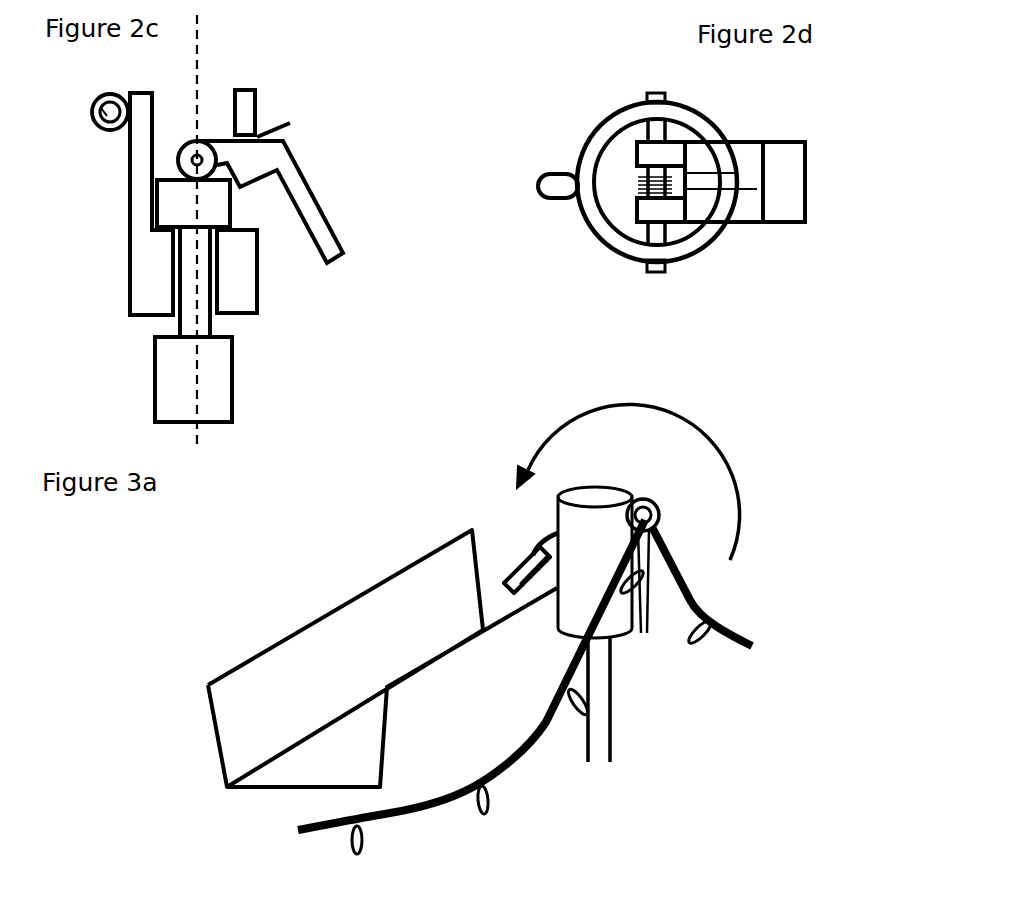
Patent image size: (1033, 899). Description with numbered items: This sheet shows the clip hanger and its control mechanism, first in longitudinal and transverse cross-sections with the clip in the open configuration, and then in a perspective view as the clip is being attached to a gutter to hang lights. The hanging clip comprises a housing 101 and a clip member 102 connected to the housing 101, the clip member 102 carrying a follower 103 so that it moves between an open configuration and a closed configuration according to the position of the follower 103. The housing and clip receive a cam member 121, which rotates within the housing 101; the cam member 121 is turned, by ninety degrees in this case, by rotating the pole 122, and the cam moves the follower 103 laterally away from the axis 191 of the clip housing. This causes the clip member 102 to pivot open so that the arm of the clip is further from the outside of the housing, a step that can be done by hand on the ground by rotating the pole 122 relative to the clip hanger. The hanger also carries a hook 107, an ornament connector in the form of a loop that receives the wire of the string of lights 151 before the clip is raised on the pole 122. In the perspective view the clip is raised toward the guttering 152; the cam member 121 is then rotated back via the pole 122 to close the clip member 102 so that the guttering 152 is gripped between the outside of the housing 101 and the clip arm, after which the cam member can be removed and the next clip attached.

In FIG. 3A, the housing 101 is at (587, 526).
In FIG. 2C, the clip member 102 is at (328, 263).
In FIG. 2D, the clip member 102 is at (778, 212).
In FIG. 3A, the clip member 102 is at (520, 572).
In FIG. 2C, the follower 103 is at (215, 168).
In FIG. 2C, the hook 107 is at (100, 124).
In FIG. 3A, the hook 107 is at (660, 508).
In FIG. 2C, the cam member 121 is at (192, 208).
In FIG. 2C, the pole 122 is at (205, 363).
In FIG. 3A, the string of lights 151 is at (705, 606).
In FIG. 3A, the guttering 152 is at (213, 742).
In FIG. 2C, the axis 191 is at (205, 73).